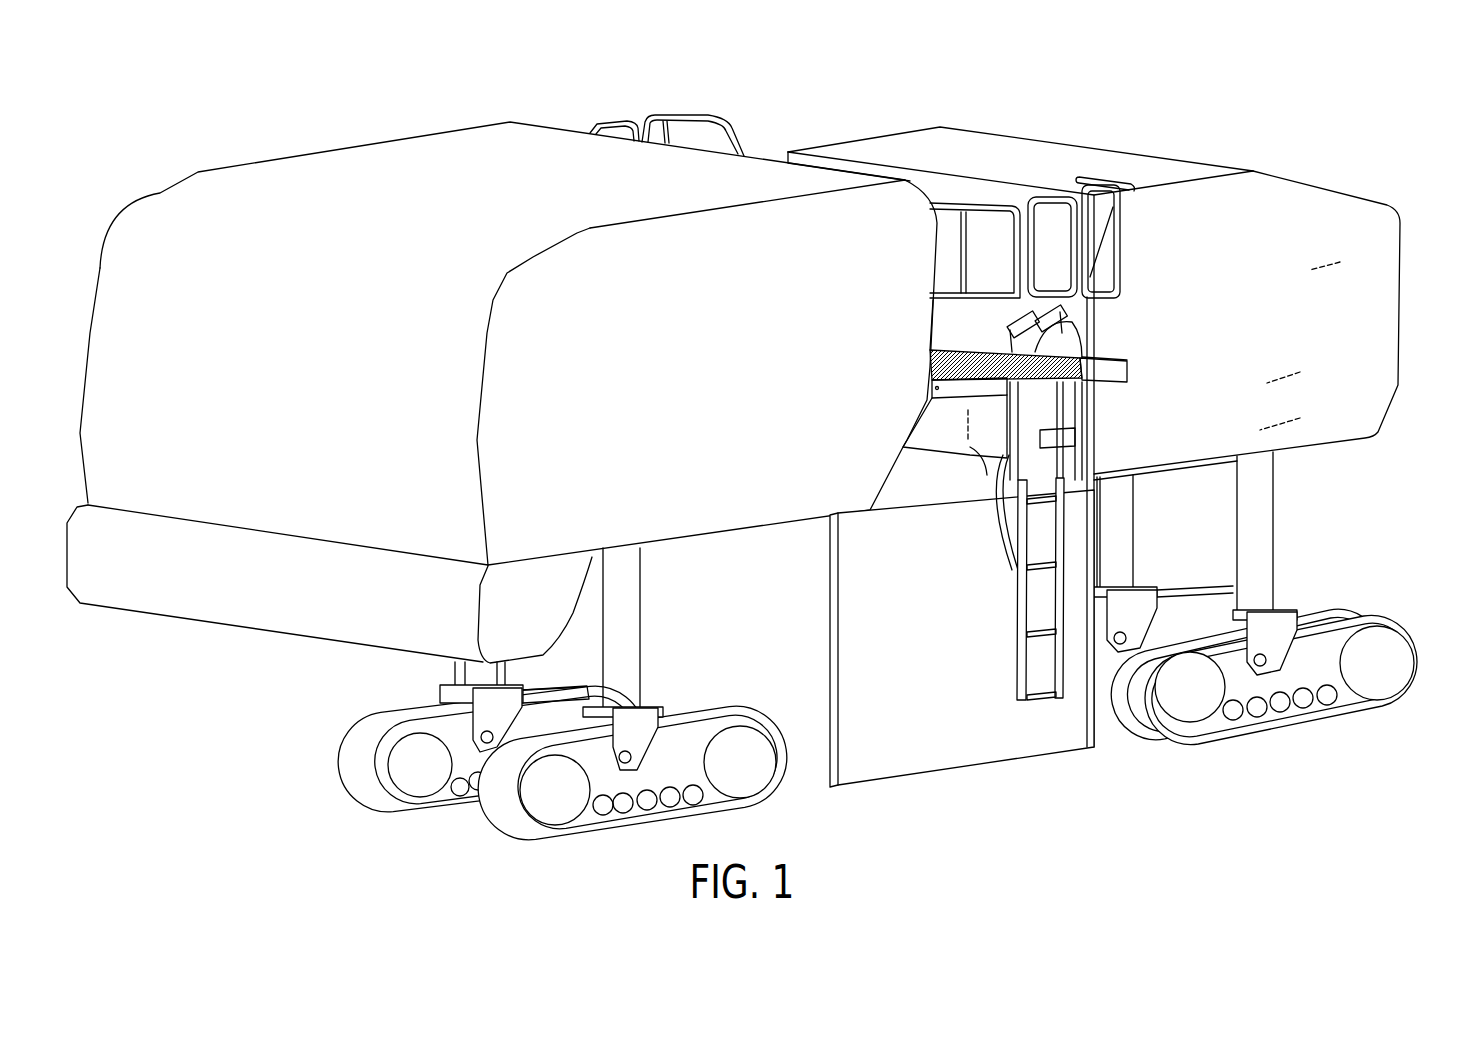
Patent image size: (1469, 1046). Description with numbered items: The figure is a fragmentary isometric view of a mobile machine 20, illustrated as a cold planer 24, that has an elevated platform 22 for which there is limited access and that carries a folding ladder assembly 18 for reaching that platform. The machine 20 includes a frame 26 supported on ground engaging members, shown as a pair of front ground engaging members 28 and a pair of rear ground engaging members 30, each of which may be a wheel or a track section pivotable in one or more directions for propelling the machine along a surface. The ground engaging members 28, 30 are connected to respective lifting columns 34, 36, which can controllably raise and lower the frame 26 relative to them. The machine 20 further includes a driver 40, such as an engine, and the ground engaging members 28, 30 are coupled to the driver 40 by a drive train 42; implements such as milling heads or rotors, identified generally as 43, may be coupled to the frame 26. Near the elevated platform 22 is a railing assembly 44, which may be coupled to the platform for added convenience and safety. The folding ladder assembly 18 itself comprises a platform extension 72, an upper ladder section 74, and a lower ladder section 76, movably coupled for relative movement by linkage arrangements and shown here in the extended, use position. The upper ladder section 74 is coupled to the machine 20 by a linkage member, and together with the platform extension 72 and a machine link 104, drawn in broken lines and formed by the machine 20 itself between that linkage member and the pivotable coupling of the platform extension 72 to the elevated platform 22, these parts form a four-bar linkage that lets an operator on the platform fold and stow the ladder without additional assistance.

The folding ladder assembly 18 is at (1025, 424).
The machine 20 is at (1109, 433).
The elevated platform 22 is at (967, 347).
The cold planer 24 is at (1020, 161).
The frame 26 is at (1300, 418).
The front ground engaging member 28 is at (328, 694).
The rear ground engaging member 30 is at (1343, 577).
The lifting column 34 is at (490, 677).
The lifting column 36 is at (1120, 545).
The driver 40 is at (1340, 262).
The drive train 42 is at (1300, 372).
The implements 43 is at (930, 710).
The railing assembly 44 is at (1120, 163).
The platform extension 72 is at (1115, 360).
The upper ladder section 74 is at (1063, 437).
The lower ladder section 76 is at (1020, 607).
The machine link 104 is at (967, 435).